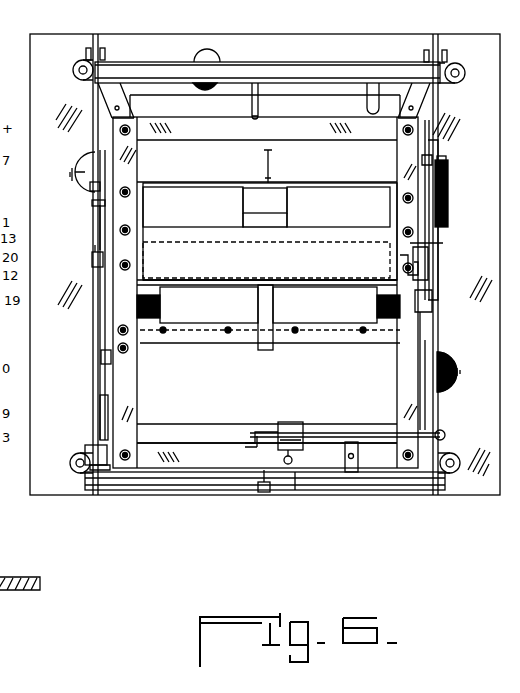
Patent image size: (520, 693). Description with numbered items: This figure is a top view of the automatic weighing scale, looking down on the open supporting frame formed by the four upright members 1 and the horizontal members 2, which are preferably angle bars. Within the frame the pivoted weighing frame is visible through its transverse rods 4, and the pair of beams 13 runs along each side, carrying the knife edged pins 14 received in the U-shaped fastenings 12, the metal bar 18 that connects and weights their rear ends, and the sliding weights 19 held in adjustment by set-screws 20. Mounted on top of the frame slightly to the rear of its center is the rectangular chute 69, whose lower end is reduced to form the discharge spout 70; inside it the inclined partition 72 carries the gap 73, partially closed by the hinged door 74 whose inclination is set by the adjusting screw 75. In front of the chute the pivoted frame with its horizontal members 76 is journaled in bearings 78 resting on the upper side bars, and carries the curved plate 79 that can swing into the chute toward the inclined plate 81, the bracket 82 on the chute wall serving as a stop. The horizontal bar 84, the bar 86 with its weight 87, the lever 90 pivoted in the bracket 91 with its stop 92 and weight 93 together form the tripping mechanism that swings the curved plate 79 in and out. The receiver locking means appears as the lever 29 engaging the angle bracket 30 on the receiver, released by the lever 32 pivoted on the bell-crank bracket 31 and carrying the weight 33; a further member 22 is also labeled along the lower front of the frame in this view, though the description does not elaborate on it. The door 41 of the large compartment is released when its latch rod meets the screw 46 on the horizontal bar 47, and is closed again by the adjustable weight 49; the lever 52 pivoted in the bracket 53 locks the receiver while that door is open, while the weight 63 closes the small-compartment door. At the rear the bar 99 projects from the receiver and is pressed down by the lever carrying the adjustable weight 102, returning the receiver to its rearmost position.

The upright members 1 is at (115, 95).
The horizontal members 2 is at (110, 508).
The transverse rods 4 is at (163, 480).
The U-shaped fastening 12 is at (86, 52).
The beams 13 is at (95, 357).
The knife edged pins 14 is at (86, 56).
The metal bar 18 is at (160, 74).
The sliding weights 19 is at (90, 187).
The set-screws 20 is at (70, 175).
The rail 22 is at (150, 428).
The lever 29 is at (98, 234).
The angle bracket 30 is at (95, 205).
The bracket 31 is at (110, 370).
The lever 32 is at (104, 416).
The weight 33 is at (86, 452).
The door 41 is at (258, 388).
The screw 46 is at (262, 492).
The horizontal bar 47 is at (300, 488).
The adjustable weight 49 is at (448, 188).
The lever 52 is at (443, 242).
The bracket 53 is at (445, 167).
The adjustable weight 63 is at (92, 262).
The rectangular chute 69 is at (165, 281).
The discharge spout 70 is at (270, 231).
The inclined partition 72 is at (266, 207).
The gap 73 is at (265, 221).
The door 74 is at (265, 200).
The adjusting screw 75 is at (272, 166).
The horizontal members 76 is at (182, 334).
The bearings 78 is at (150, 307).
The curved plate 79 is at (268, 314).
The inclined plate 81 is at (266, 260).
The bracket 82 is at (273, 306).
The horizontal bar 84 is at (425, 412).
The bar 86 is at (430, 302).
The weight 87 is at (408, 268).
The lever 90 is at (314, 433).
The bracket 91 is at (345, 453).
The stop 92 is at (247, 450).
The weight 93 is at (286, 424).
The bar 99 is at (258, 96).
The adjustable weight 102 is at (212, 61).